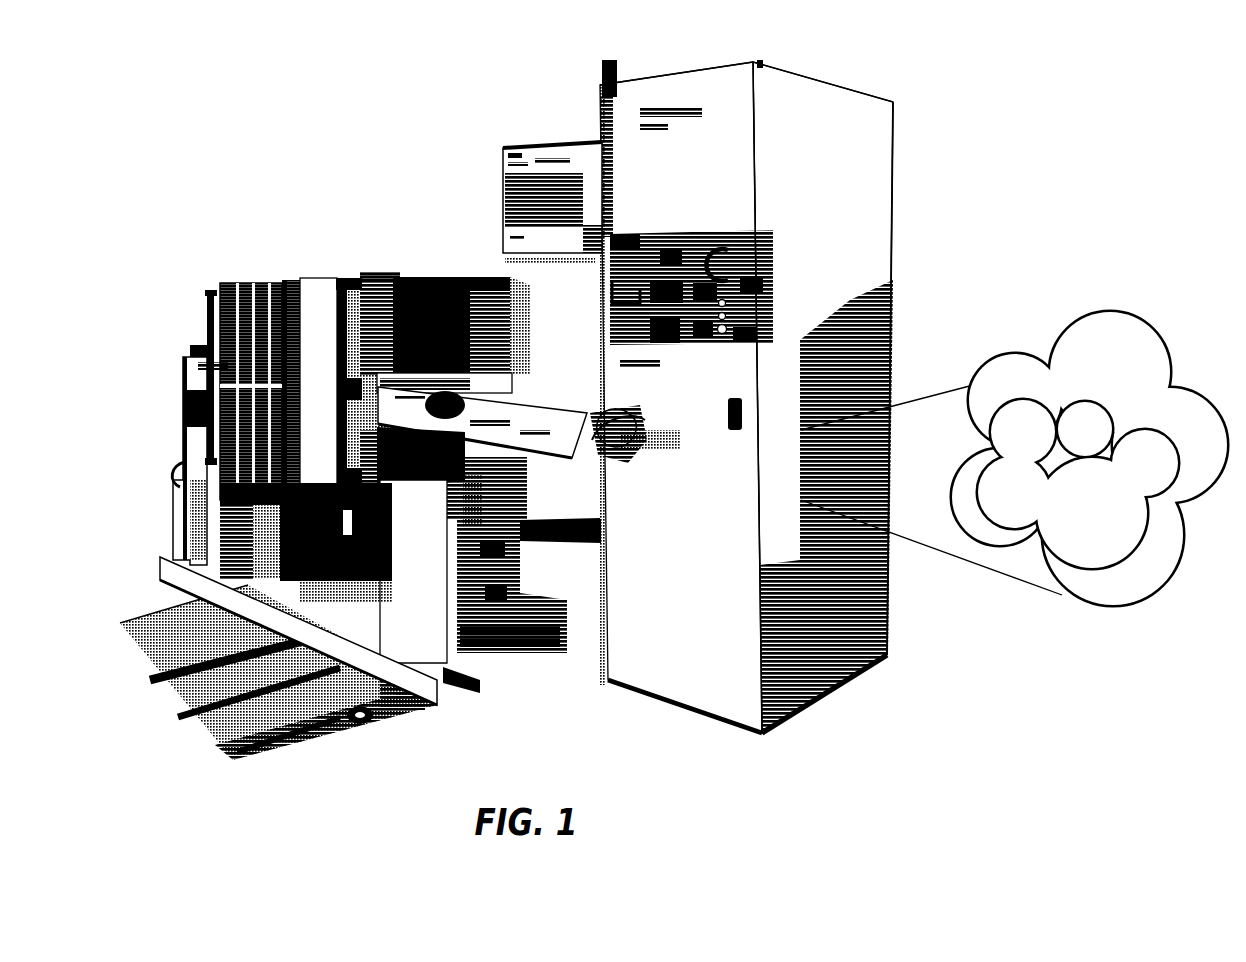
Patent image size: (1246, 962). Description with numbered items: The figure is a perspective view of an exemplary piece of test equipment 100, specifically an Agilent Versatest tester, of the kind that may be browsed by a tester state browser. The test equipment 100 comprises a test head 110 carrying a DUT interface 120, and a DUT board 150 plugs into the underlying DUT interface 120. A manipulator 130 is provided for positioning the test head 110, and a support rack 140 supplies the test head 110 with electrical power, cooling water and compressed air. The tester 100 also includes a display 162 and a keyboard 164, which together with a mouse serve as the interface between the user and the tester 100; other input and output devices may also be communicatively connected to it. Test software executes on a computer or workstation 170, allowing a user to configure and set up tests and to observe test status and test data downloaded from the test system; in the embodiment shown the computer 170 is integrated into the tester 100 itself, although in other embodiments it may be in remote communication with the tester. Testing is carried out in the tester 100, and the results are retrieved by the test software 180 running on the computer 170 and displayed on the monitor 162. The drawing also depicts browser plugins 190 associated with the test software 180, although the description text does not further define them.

The test equipment 100 is at (320, 180).
The test head 110 is at (408, 276).
The DUT interface 120 is at (288, 280).
The manipulator 130 is at (185, 453).
The support rack 140 is at (806, 76).
The DUT board 150 is at (237, 285).
The display 162 is at (541, 139).
The keyboard 164 is at (544, 396).
The computer 170 is at (618, 336).
The test software 180 is at (1153, 423).
The browser plugins 190 is at (1086, 531).